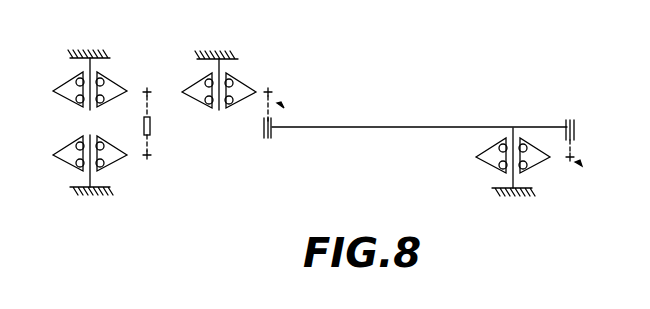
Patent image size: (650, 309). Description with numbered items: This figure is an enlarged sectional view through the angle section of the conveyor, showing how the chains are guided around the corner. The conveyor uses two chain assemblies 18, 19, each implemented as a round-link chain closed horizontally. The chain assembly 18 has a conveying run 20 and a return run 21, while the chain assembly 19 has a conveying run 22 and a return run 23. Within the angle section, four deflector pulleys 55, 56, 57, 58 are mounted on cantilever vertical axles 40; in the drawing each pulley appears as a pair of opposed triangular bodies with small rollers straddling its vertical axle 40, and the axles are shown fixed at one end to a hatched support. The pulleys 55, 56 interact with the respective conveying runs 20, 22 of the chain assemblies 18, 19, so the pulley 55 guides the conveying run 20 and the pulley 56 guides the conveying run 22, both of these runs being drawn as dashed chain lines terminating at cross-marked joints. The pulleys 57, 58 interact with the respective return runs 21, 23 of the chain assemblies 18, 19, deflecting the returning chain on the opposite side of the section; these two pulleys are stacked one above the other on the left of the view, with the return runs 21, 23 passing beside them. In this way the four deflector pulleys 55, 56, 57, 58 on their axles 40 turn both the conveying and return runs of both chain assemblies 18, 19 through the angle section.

The chain assembly 18 is at (279, 106).
The chain assembly 19 is at (577, 164).
The conveying run 20 is at (270, 90).
The return run 21 is at (146, 90).
The conveying run 22 is at (573, 155).
The return run 23 is at (149, 157).
The cantilever vertical axle 40 is at (89, 105).
The deflector pulley 55 is at (541, 160).
The deflector pulley 56 is at (245, 86).
The deflector pulley 57 is at (68, 85).
The deflector pulley 58 is at (66, 158).